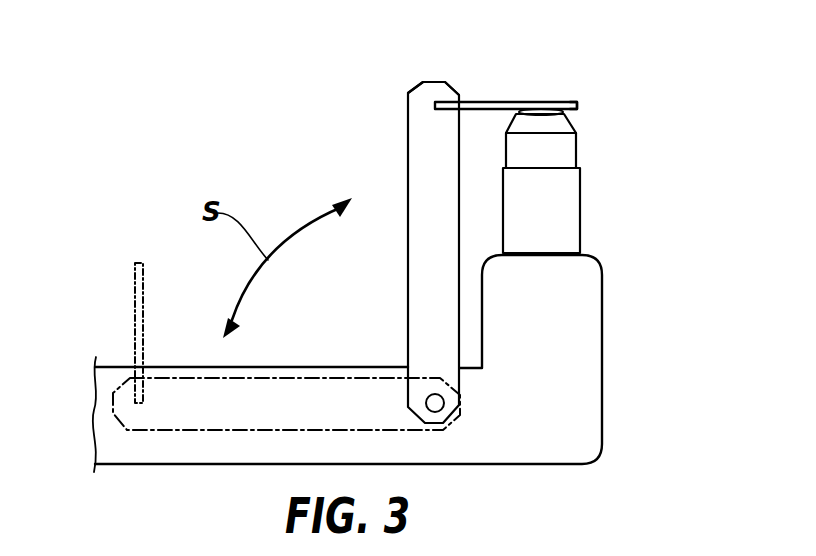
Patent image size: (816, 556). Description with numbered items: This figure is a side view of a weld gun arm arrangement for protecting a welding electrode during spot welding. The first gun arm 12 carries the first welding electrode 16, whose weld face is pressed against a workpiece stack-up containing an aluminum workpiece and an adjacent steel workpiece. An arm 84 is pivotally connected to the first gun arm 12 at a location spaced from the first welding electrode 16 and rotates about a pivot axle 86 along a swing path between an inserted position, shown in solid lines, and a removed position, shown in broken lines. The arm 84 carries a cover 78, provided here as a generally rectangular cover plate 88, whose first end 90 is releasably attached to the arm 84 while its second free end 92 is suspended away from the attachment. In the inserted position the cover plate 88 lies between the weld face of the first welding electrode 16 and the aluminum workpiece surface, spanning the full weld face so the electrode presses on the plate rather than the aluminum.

The first gun arm 12 is at (603, 308).
The first welding electrode 16 is at (592, 146).
The cover 78 is at (539, 90).
The arm 84 is at (408, 263).
The pivot axle 86 is at (444, 401).
The cover plate 88 is at (477, 101).
The first end 90 is at (435, 105).
The second free end 92 is at (580, 105).